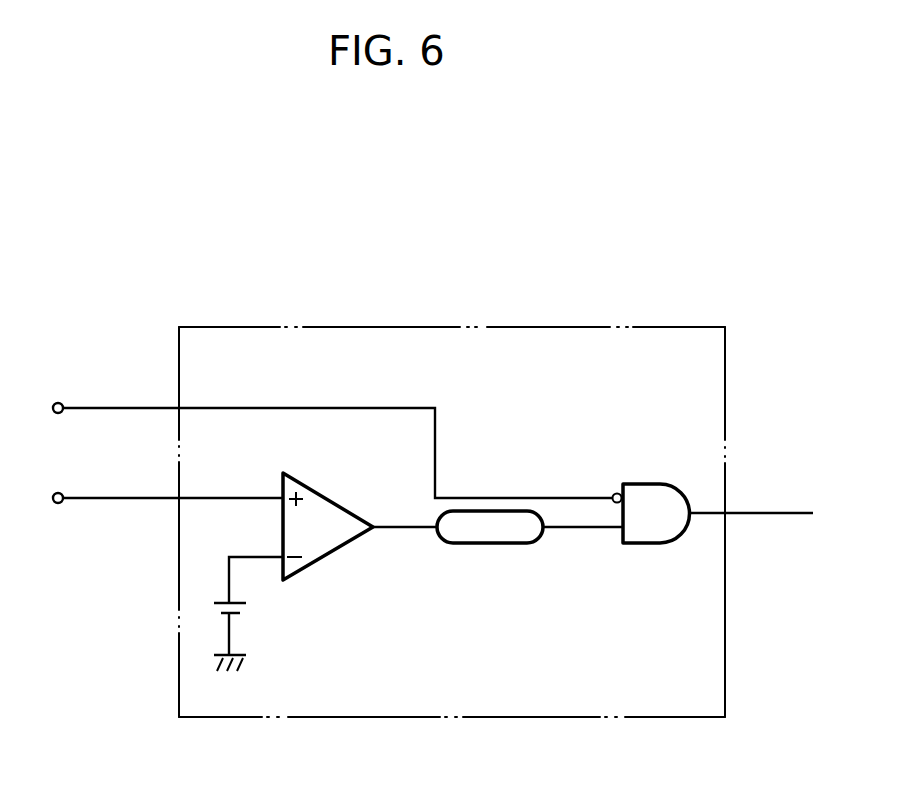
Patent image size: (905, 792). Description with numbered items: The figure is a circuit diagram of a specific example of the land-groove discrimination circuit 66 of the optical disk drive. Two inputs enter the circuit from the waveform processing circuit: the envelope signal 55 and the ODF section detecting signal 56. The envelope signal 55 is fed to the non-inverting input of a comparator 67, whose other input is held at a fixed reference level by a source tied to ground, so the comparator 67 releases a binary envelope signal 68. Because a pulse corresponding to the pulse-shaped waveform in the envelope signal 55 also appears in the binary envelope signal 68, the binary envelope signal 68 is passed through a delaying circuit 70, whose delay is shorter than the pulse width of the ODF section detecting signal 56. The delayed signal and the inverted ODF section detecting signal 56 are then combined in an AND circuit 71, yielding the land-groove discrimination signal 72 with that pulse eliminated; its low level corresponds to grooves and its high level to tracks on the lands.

The envelope signal 55 is at (108, 502).
The ODF section detecting signal 56 is at (112, 407).
The land-groove discrimination circuit 66 is at (327, 327).
The comparator 67 is at (342, 548).
The binary envelope signal 68 is at (405, 528).
The delaying circuit 70 is at (503, 543).
The AND circuit 71 is at (651, 483).
The land-groove discrimination signal 72 is at (772, 515).